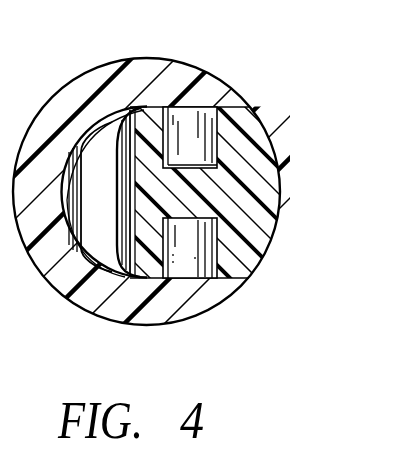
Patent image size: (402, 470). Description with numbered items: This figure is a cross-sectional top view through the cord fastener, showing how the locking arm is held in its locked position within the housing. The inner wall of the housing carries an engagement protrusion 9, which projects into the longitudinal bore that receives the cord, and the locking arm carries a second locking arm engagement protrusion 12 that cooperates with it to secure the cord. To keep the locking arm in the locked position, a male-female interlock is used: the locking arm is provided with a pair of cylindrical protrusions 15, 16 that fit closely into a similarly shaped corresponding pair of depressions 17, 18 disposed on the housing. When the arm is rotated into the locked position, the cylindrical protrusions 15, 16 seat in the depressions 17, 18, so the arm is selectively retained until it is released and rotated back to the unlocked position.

The engagement protrusion 9 is at (78, 217).
The second locking arm engagement protrusion 12 is at (108, 191).
The cylindrical protrusion 15 is at (227, 107).
The cylindrical protrusion 16 is at (224, 279).
The depression 17 is at (220, 107).
The depression 18 is at (223, 279).